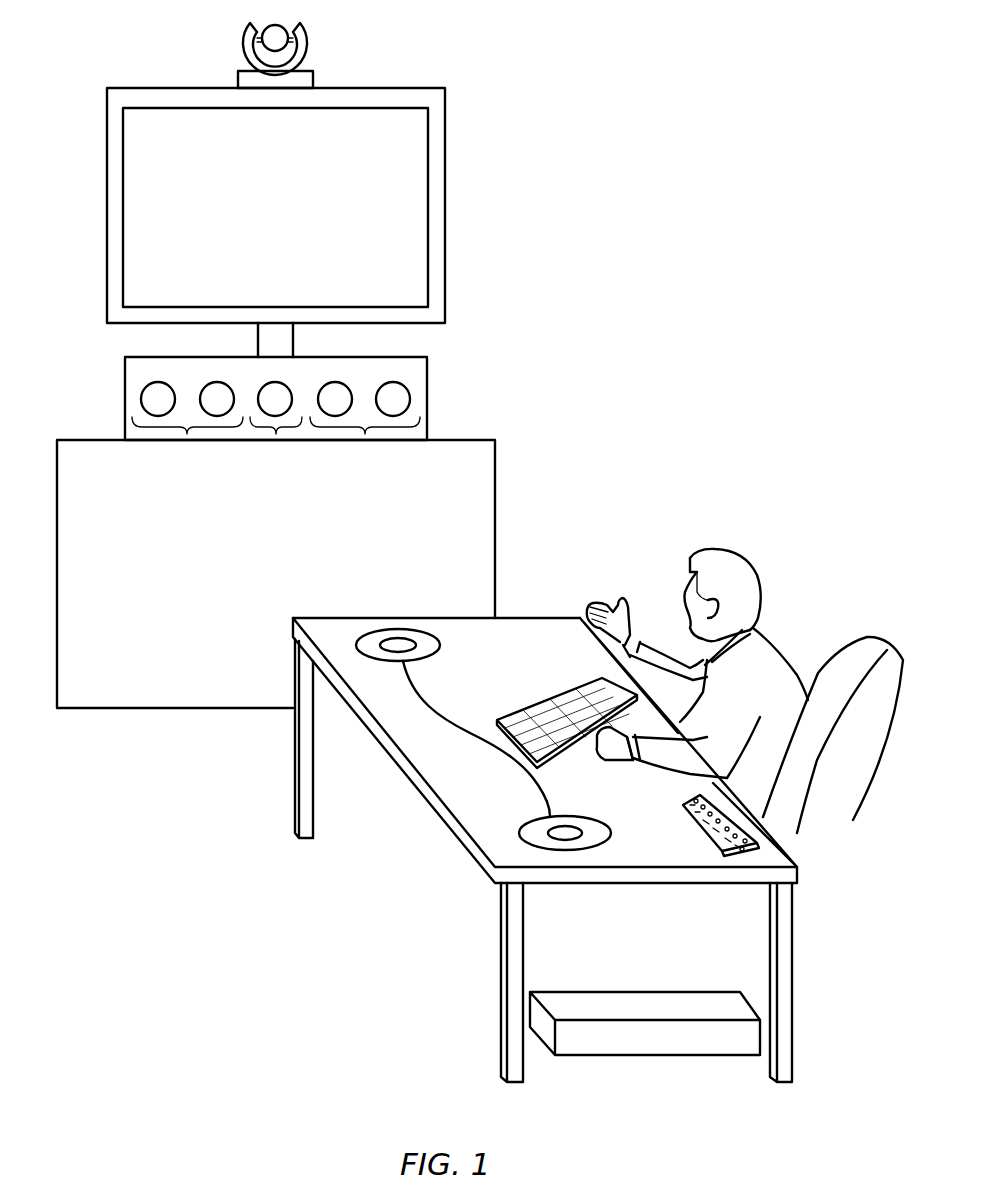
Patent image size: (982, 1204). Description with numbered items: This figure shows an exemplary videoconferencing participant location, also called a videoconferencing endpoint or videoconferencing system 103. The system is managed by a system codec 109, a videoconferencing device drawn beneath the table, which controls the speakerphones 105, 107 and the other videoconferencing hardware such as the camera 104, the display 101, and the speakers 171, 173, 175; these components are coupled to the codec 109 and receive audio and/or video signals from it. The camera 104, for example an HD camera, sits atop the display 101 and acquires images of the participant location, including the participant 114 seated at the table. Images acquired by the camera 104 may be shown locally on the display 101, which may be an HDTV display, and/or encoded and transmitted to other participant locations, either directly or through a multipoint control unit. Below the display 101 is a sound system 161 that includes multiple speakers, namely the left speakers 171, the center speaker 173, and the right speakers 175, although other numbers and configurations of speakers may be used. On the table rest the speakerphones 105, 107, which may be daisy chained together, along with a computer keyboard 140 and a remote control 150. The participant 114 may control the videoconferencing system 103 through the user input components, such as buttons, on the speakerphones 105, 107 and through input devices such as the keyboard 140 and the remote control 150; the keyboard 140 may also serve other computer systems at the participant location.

The display 101 is at (397, 156).
The videoconferencing system 103 is at (568, 87).
The camera 104 is at (306, 32).
The speakerphone 105 is at (536, 815).
The speakerphone 107 is at (440, 645).
The system codec 109 is at (672, 1055).
The participant 114 is at (743, 563).
The computer keyboard 140 is at (552, 695).
The remote control 150 is at (685, 797).
The sound system 161 is at (427, 372).
The left speakers 171 is at (187, 434).
The center speaker 173 is at (276, 434).
The right speakers 175 is at (365, 434).